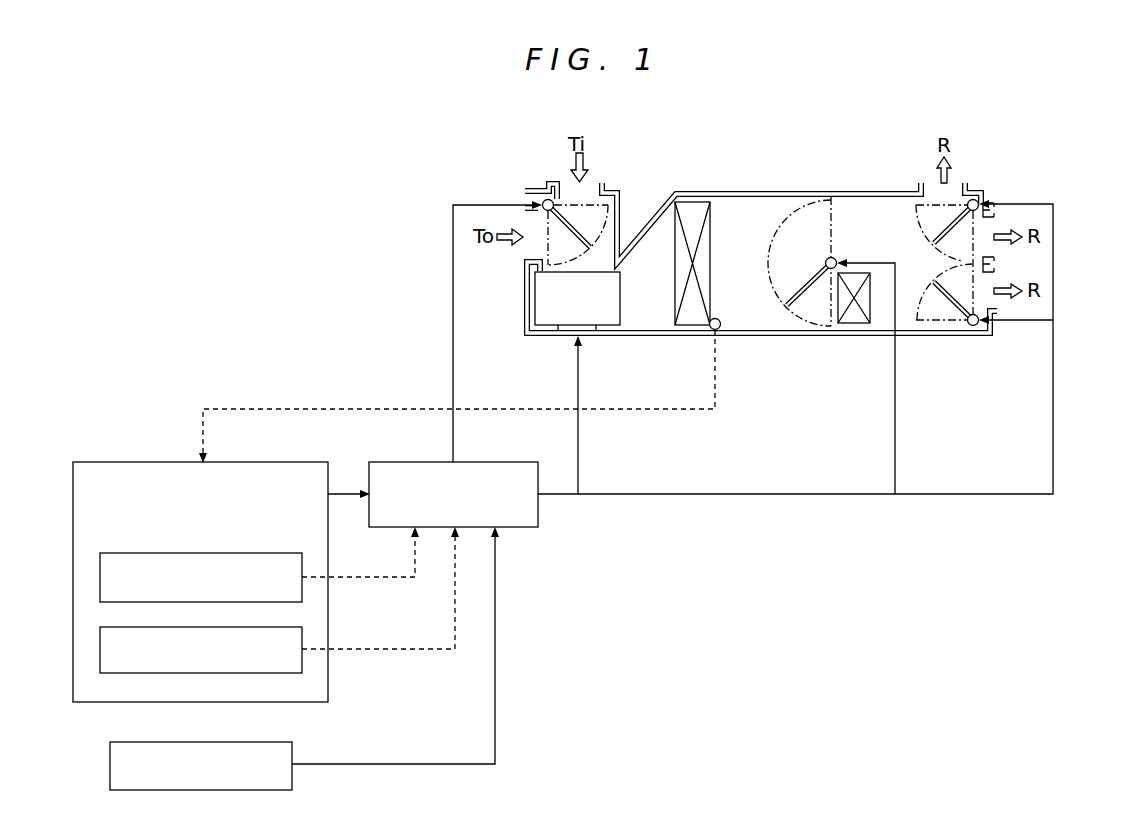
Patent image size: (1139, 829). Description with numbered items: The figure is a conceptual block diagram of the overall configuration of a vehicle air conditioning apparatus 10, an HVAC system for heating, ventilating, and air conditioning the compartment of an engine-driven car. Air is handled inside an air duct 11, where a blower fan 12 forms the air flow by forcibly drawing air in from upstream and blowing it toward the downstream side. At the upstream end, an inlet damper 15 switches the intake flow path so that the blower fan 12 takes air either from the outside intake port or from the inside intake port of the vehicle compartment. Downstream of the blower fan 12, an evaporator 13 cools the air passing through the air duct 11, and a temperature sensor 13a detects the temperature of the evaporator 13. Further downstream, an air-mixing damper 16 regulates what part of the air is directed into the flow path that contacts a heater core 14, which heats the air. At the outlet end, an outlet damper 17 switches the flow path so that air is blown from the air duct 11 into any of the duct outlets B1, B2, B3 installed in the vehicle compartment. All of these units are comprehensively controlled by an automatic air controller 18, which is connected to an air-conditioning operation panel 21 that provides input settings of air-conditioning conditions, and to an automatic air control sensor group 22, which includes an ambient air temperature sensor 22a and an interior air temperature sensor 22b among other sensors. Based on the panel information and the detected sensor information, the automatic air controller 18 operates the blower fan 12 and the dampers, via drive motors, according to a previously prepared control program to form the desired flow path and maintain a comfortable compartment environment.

The air conditioning apparatus 10 is at (1027, 134).
The air duct 11 is at (776, 192).
The blower fan 12 is at (621, 310).
The evaporator 13 is at (712, 235).
The temperature sensor 13a is at (717, 318).
The heater core 14 is at (872, 305).
The inlet damper 15 is at (574, 226).
The air-mixing damper 16 is at (801, 288).
The outlet damper 17 is at (944, 232).
The automatic air controller 18 is at (485, 462).
The air-conditioning operation panel 21 is at (200, 742).
The automatic air control sensor group 22 is at (165, 462).
The ambient air temperature sensor 22a is at (205, 553).
The interior air temperature sensor 22b is at (205, 627).
The duct outlet B1 is at (963, 185).
The duct outlet B2 is at (995, 222).
The duct outlet B3 is at (993, 275).